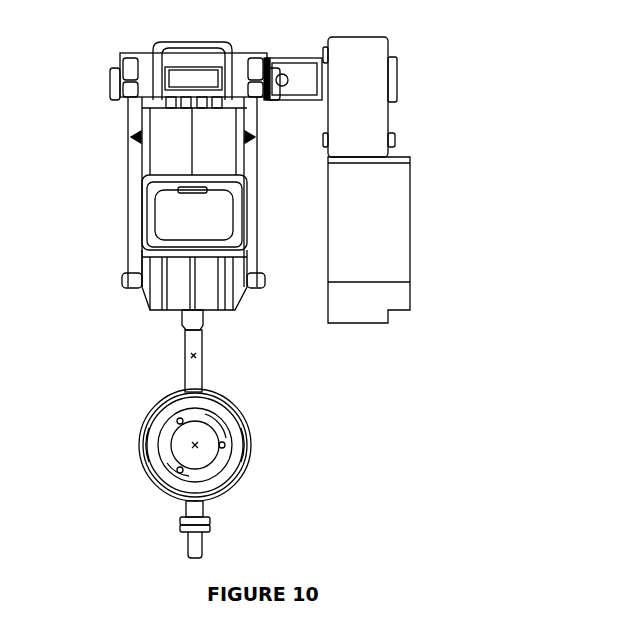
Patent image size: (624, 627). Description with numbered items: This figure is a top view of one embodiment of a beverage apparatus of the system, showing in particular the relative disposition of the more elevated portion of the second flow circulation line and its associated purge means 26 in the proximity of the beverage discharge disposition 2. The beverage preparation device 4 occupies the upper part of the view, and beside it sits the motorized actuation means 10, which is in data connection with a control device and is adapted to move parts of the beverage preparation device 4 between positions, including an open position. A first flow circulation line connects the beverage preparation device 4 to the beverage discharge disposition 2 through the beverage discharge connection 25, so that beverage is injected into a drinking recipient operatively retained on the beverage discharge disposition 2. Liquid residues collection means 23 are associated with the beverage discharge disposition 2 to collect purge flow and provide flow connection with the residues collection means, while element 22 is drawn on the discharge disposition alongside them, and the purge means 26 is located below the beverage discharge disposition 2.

The beverage preparation device 4 is at (195, 176).
The motorized actuation means 10 is at (391, 180).
The beverage discharge connection 25 is at (214, 351).
The beverage discharge disposition 2 is at (180, 439).
The liquid residues collection means 23 is at (141, 445).
The ring segment 22 is at (246, 447).
The purge means 26 is at (218, 529).